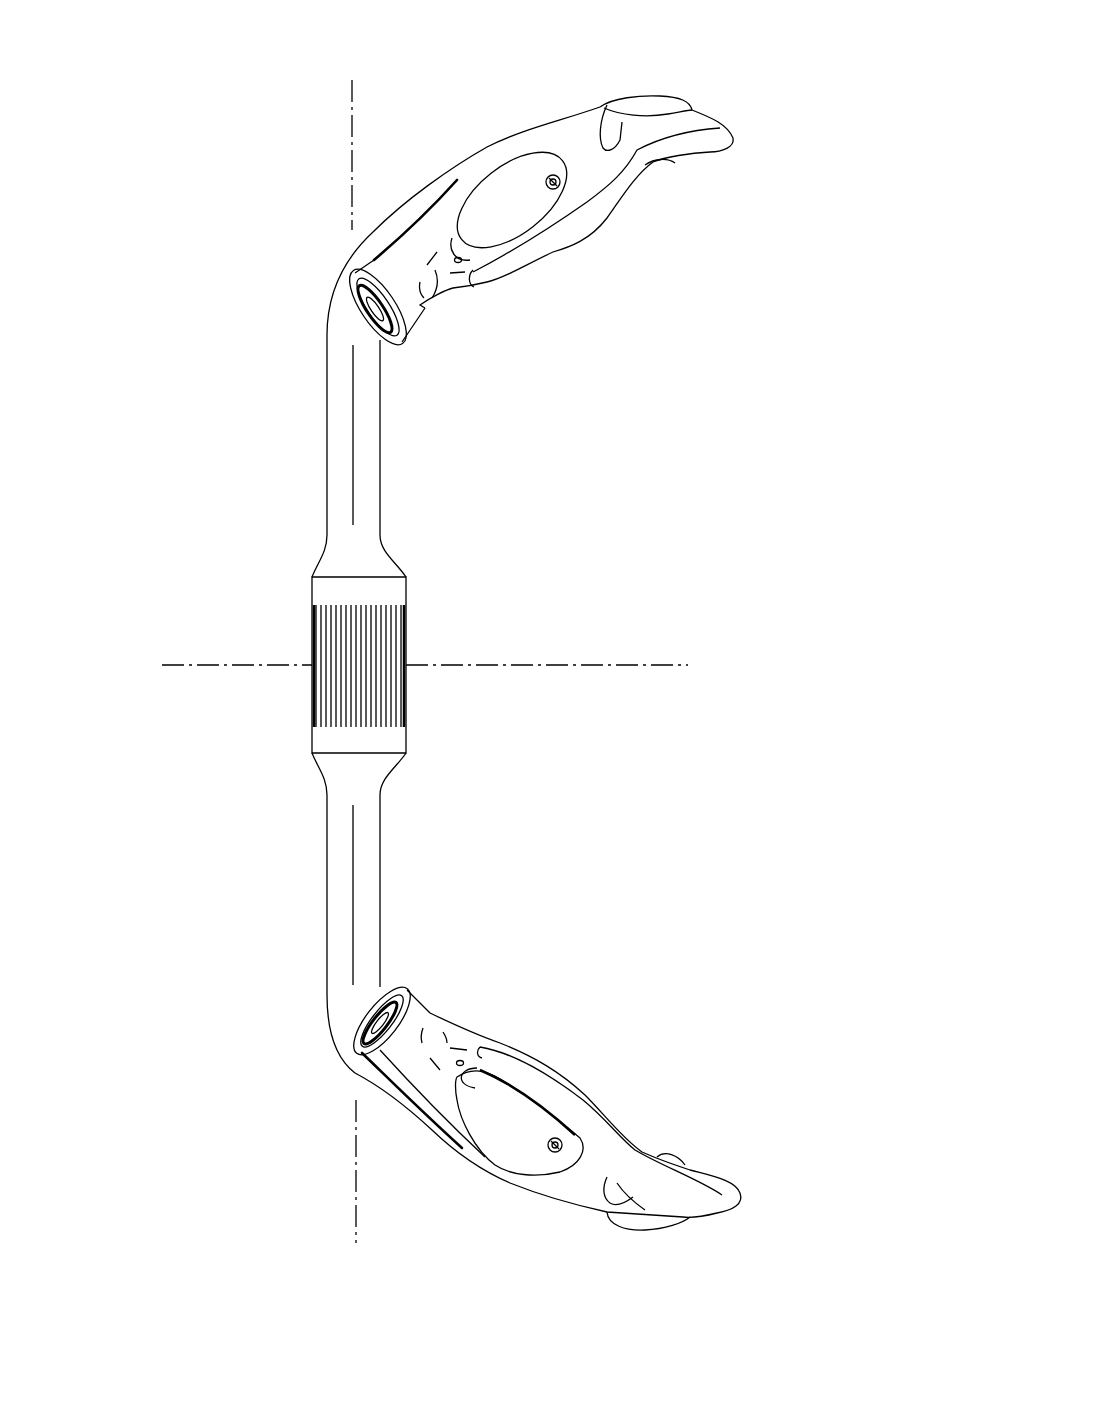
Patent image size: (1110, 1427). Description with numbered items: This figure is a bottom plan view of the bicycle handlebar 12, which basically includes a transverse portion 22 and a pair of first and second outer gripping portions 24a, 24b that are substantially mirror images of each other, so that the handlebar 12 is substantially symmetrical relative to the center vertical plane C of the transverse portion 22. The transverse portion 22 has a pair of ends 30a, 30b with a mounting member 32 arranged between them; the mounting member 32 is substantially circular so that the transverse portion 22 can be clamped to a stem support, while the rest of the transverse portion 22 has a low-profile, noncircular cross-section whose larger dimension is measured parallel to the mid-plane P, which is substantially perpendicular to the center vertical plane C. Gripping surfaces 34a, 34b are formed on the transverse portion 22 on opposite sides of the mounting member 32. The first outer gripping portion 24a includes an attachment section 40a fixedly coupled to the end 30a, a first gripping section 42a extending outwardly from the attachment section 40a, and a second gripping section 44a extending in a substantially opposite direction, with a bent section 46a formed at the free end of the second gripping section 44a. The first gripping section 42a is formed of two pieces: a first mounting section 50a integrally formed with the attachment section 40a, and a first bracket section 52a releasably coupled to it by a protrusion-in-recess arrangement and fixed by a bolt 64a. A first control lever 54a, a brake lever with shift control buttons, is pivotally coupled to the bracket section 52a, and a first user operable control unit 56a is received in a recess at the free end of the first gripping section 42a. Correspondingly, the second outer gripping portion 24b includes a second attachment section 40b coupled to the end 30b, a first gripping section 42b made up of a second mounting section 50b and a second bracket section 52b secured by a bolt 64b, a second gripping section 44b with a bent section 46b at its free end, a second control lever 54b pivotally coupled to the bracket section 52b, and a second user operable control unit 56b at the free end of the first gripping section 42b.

The bicycle handlebar 12 is at (285, 200).
The transverse portion 22 is at (312, 475).
The first outer gripping portion 24a is at (495, 128).
The second outer gripping portion 24b is at (529, 1203).
The first end 30a is at (328, 337).
The second end 30b is at (330, 995).
The mounting member 32 is at (313, 700).
The first gripping surface 34a is at (327, 422).
The second gripping surface 34b is at (327, 872).
The attachment section 40a is at (388, 230).
The second attachment section 40b is at (370, 1092).
The first gripping section 42a is at (412, 333).
The first gripping section 42b is at (427, 1123).
The second gripping section 44a is at (585, 117).
The second gripping section 44b is at (644, 1182).
The bent section 46a is at (607, 97).
The bent section 46b is at (620, 1227).
The first mounting section 50a is at (407, 245).
The second mounting section 50b is at (405, 1093).
The first bracket section 52a is at (430, 305).
The second bracket section 52b is at (425, 1015).
The first control lever 54a is at (585, 234).
The second control lever 54b is at (557, 1072).
The first user operable control unit 56a is at (407, 340).
The second user operable control unit 56b is at (405, 988).
The bolt 64a is at (560, 182).
The bolt 64b is at (562, 1143).
The center vertical plane C is at (640, 665).
The mid-plane P is at (356, 1197).